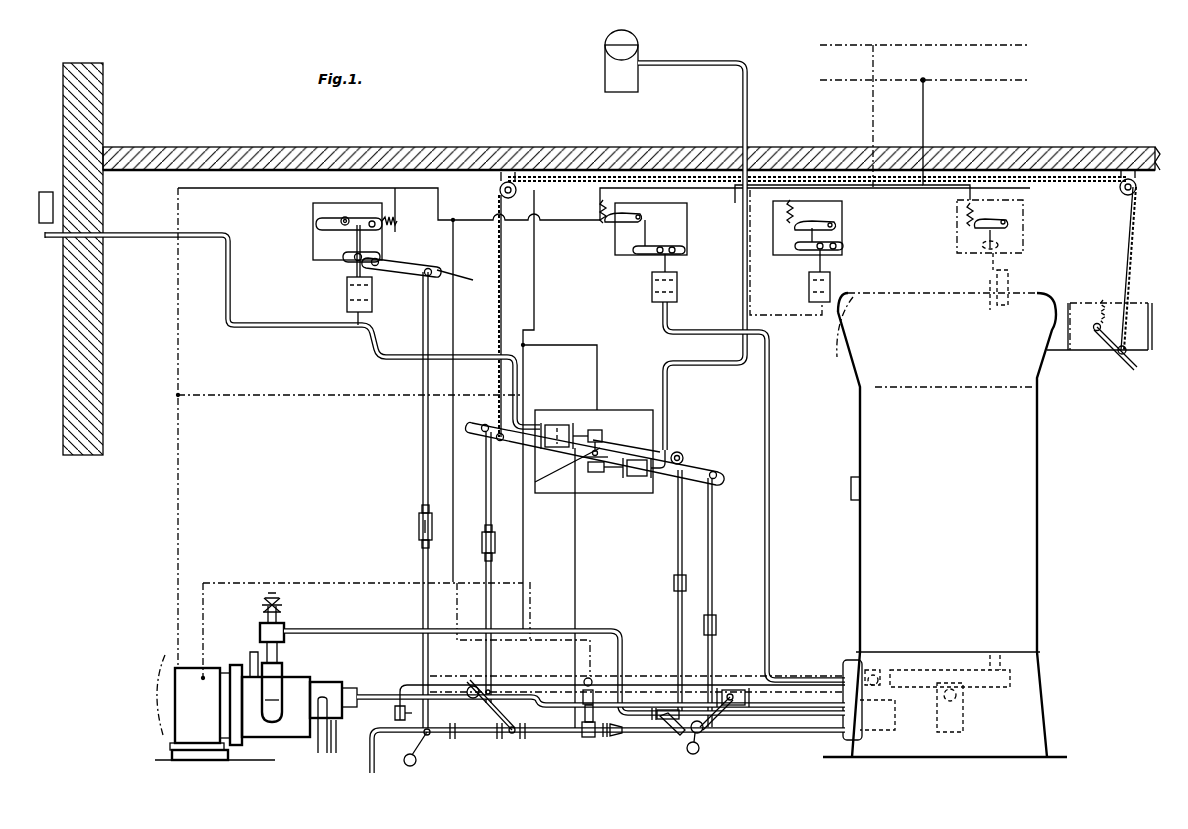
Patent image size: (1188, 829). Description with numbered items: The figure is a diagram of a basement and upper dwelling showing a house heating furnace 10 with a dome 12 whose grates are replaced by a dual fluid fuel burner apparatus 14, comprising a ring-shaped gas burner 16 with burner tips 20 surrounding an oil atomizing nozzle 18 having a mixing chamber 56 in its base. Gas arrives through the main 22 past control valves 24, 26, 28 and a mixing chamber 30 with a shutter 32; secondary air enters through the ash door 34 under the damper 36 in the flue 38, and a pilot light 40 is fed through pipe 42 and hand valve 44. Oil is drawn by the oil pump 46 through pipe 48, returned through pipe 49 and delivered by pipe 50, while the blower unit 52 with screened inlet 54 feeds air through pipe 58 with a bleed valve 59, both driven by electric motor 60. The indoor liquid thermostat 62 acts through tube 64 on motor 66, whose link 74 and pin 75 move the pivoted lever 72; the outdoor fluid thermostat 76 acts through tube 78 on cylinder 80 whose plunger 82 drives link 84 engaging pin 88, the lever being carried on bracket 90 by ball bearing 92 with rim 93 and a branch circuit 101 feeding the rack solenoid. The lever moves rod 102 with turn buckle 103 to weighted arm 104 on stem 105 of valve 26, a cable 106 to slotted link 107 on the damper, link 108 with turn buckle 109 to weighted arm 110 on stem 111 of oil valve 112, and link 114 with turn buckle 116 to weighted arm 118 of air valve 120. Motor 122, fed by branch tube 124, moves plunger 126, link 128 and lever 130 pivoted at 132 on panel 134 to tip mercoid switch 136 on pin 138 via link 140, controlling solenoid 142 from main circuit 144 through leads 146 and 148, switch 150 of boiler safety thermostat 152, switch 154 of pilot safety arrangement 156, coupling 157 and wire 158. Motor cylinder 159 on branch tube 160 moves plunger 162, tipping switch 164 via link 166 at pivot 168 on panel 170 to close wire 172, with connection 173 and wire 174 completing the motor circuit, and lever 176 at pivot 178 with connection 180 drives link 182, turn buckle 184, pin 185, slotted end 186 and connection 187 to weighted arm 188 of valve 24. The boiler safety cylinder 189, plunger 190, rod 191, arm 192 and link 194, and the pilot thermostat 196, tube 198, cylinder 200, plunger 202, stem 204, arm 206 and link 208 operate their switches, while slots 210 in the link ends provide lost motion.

The furnace 10 is at (1038, 540).
The dome 12 is at (1040, 375).
The dual fluid fuel burner apparatus 14 is at (962, 715).
The gas burner 16 is at (1010, 678).
The oil atomizing nozzle 18 is at (958, 698).
The burner tips 20 is at (992, 655).
The main 22 is at (368, 775).
The control valve 24 is at (455, 739).
The control valve 26 is at (517, 739).
The control valve 28 is at (583, 740).
The mixing chamber 30 is at (640, 732).
The shutter 32 is at (610, 740).
The ash door 34 is at (845, 735).
The damper 36 is at (1103, 300).
The flue 38 is at (1131, 300).
The pilot light 40 is at (880, 672).
The pipe 42 is at (530, 690).
The hand valve 44 is at (393, 712).
The oil pump 46 is at (312, 685).
The pipe 48 is at (330, 738).
The pipe 49 is at (316, 745).
The pipe 50 is at (358, 688).
The blower unit 52 is at (285, 680).
The screened inlet 54 is at (252, 652).
The mixing chamber 56 is at (958, 692).
The pipe 58 is at (328, 630).
The valve 59 is at (262, 604).
The electric motor 60 is at (214, 702).
The liquid thermostat 62 is at (605, 75).
The tube 64 is at (748, 108).
The motor 66 is at (640, 478).
The pivoted lever 72 is at (560, 470).
The link 74 is at (606, 474).
The pin 75 is at (610, 472).
The fluid thermostat 76 is at (41, 225).
The tube 78 is at (253, 330).
The cylinder 80 is at (548, 423).
The plunger 82 is at (560, 422).
The link 84 is at (573, 450).
The pin 88 is at (598, 428).
The bracket 90 is at (590, 474).
The ball bearing 92 is at (628, 420).
The lever 93 is at (660, 420).
The branch circuit 101 is at (256, 396).
The rod 102 is at (485, 470).
The turn buckle 103 is at (503, 543).
The weighted arm 104 is at (495, 740).
The stem 105 is at (514, 736).
The cable 106 is at (498, 290).
The slotted link 107 is at (1130, 367).
The link 108 is at (677, 545).
The turn buckle 109 is at (673, 582).
The weighted arm 110 is at (697, 755).
The stem 111 is at (670, 708).
The valve 112 is at (655, 708).
The link 114 is at (712, 535).
The turn buckle 116 is at (716, 622).
The weighted arm 118 is at (720, 712).
The valve 120 is at (738, 690).
The motor 122 is at (808, 295).
The branch tube 124 is at (785, 318).
The plunger 126 is at (856, 325).
The link 128 is at (832, 270).
The lever 130 is at (805, 252).
The pivot 132 is at (845, 244).
The panel 134 is at (846, 220).
The mercoid tipping switch 136 is at (843, 212).
The pin 138 is at (788, 215).
The link 140 is at (808, 237).
The solenoid 142 is at (602, 694).
The main circuit 144 is at (887, 48).
The lead wire 146 is at (873, 118).
The lead 148 is at (924, 118).
The switch 150 is at (1008, 218).
The boiler temperature safety thermostat 152 is at (1012, 265).
The tipping switch 154 is at (612, 230).
The pilot light safety thermostat arrangement 156 is at (688, 220).
The coupling 157 is at (454, 219).
The wire 158 is at (451, 318).
The motor cylinder 159 is at (346, 303).
The branch tube 160 is at (364, 325).
The plunger 162 is at (346, 287).
The tipping switch 164 is at (360, 215).
The link 166 is at (355, 242).
The pivot 168 is at (344, 216).
The panel 170 is at (318, 218).
The wire 172 is at (178, 212).
The connection point 173 is at (541, 604).
The wire 174 is at (312, 583).
The lever 176 is at (420, 278).
The pivot point 178 is at (380, 260).
The pin and slot connection 180 is at (345, 258).
The link 182 is at (421, 428).
The turn buckle adjustment 184 is at (418, 527).
The adjusting screw and pin 185 is at (440, 262).
The slotted end 186 is at (445, 272).
The slot and pin connection 187 is at (420, 735).
The weighted arm 188 is at (410, 767).
The motor cylinder 189 is at (990, 285).
The plunger 190 is at (992, 298).
The rod 191 is at (968, 265).
The pivoted arm 192 is at (965, 252).
The link 194 is at (972, 235).
The fluid thermostat 196 is at (872, 665).
The tube 198 is at (770, 463).
The motor cylinder 200 is at (737, 491).
The plunger 202 is at (651, 295).
The stem 204 is at (690, 282).
The pivoted arm 206 is at (640, 255).
The link 208 is at (635, 253).
The slots 210 is at (490, 706).